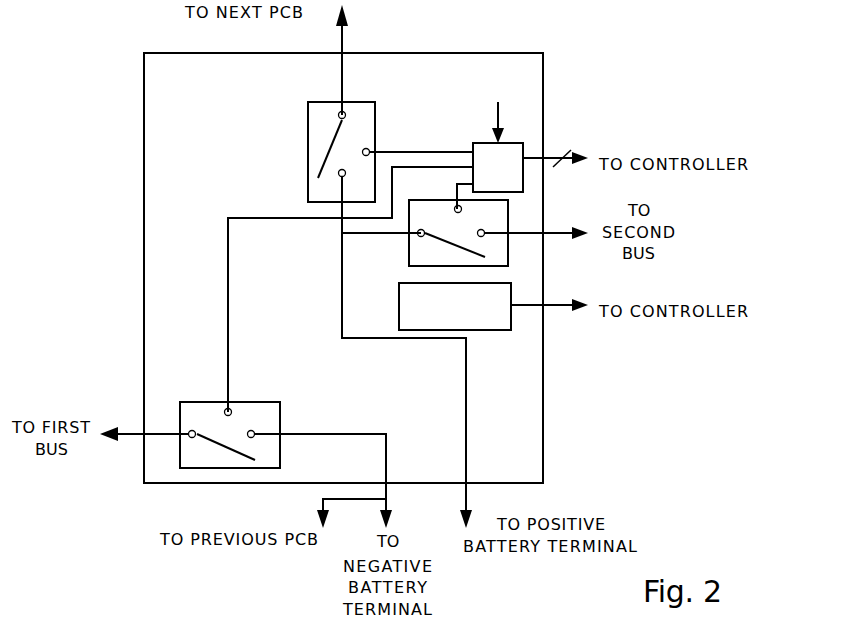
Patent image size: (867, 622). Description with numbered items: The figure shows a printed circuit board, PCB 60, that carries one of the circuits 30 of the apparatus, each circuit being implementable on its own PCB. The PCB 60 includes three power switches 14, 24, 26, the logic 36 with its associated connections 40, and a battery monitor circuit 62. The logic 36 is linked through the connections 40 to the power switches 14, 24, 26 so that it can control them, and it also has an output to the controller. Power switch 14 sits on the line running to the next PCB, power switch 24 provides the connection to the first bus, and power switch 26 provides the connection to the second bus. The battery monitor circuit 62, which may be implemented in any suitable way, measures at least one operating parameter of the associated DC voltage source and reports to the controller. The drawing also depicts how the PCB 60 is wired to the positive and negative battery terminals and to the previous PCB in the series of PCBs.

The power switch 14 is at (308, 158).
The power switch 24 is at (200, 402).
The power switch 26 is at (409, 254).
The circuit 30 is at (221, 132).
The logic 36 is at (483, 142).
The connections 40 is at (421, 150).
The printed circuit board 60 is at (144, 205).
The battery monitor circuit 62 is at (492, 332).